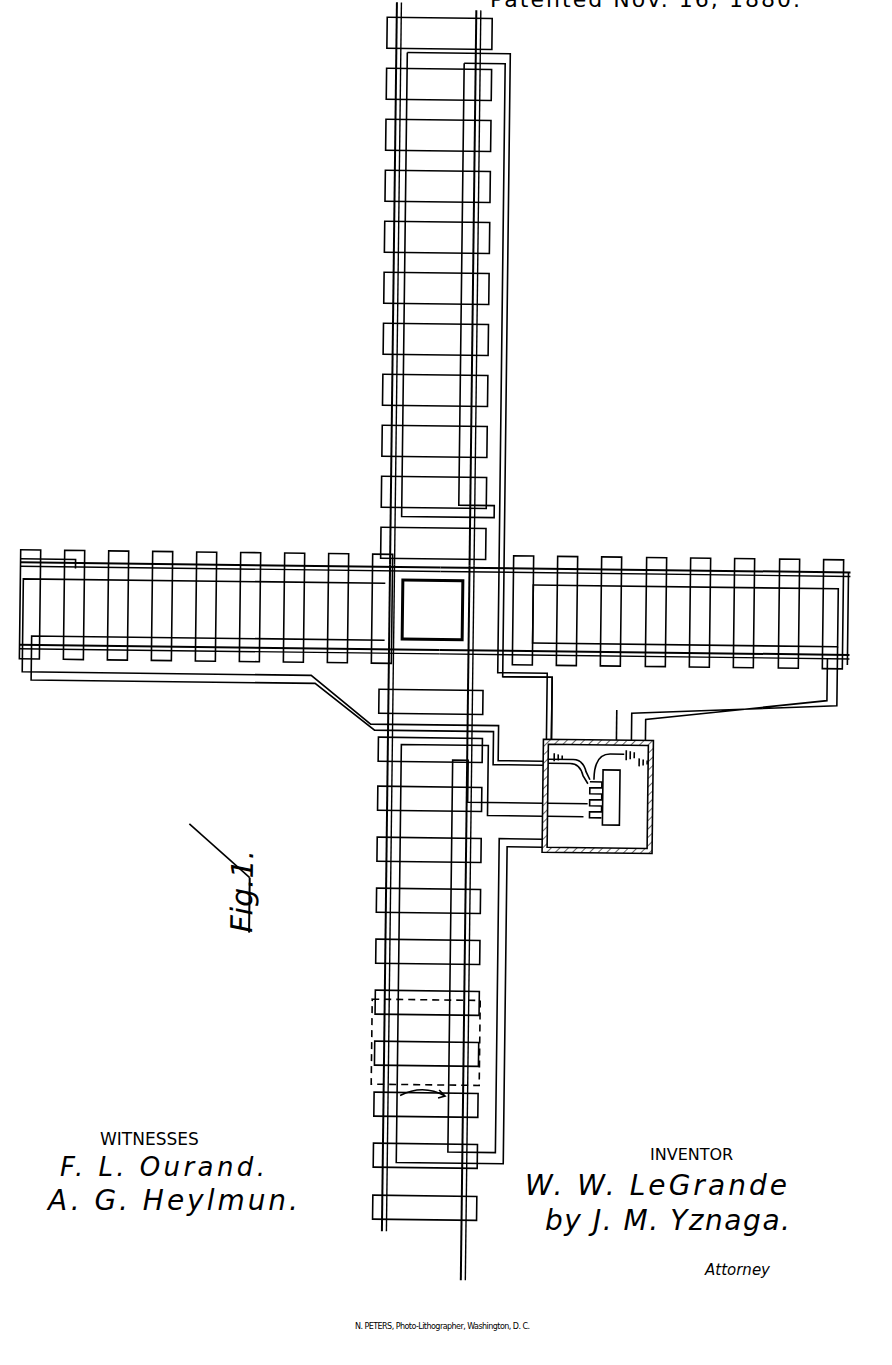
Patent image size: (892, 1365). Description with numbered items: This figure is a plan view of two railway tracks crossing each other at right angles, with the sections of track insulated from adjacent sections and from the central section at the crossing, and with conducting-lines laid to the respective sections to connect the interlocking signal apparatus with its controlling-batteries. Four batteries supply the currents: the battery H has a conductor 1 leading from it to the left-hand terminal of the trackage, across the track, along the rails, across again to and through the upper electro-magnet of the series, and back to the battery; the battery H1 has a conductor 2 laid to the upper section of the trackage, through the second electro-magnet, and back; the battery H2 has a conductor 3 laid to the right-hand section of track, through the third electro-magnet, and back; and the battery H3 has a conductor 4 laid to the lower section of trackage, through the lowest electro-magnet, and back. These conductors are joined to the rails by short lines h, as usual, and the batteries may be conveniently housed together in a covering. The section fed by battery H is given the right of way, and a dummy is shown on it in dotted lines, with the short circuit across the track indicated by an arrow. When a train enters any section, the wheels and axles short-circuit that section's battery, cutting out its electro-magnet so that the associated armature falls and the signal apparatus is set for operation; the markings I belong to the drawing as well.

The conductor 1 is at (457, 922).
The conductor 2 is at (282, 677).
The conductor 3 is at (475, 370).
The conductor 4 is at (644, 654).
The short lines h is at (432, 619).
The battery H is at (528, 717).
The battery H1 is at (599, 783).
The battery H2 is at (527, 708).
The battery H3 is at (620, 795).
The indicator I is at (605, 725).